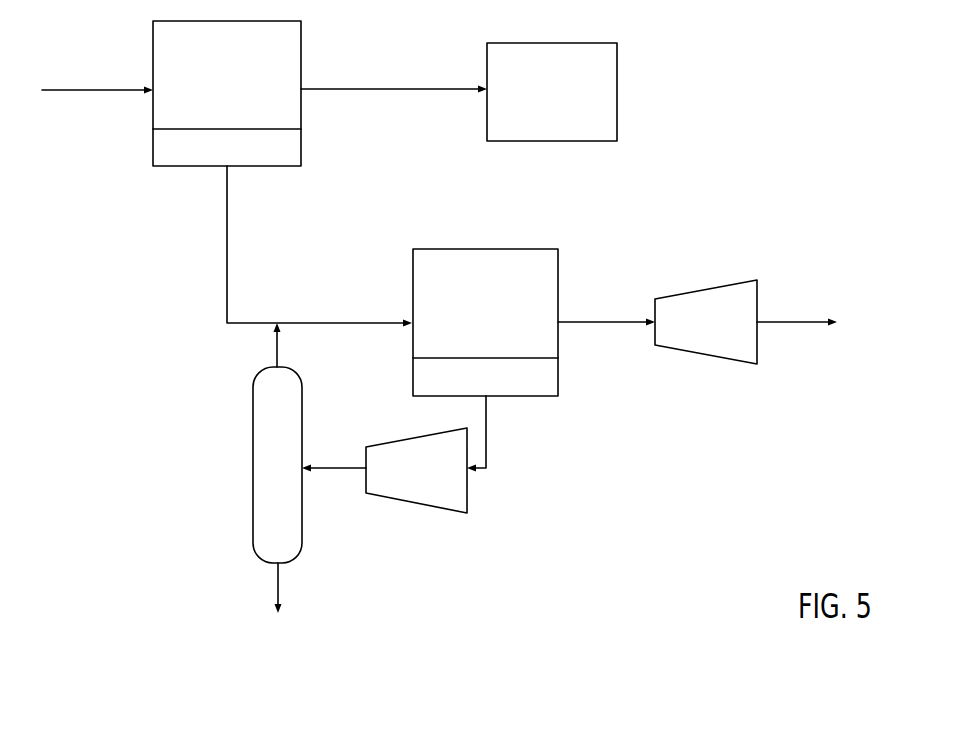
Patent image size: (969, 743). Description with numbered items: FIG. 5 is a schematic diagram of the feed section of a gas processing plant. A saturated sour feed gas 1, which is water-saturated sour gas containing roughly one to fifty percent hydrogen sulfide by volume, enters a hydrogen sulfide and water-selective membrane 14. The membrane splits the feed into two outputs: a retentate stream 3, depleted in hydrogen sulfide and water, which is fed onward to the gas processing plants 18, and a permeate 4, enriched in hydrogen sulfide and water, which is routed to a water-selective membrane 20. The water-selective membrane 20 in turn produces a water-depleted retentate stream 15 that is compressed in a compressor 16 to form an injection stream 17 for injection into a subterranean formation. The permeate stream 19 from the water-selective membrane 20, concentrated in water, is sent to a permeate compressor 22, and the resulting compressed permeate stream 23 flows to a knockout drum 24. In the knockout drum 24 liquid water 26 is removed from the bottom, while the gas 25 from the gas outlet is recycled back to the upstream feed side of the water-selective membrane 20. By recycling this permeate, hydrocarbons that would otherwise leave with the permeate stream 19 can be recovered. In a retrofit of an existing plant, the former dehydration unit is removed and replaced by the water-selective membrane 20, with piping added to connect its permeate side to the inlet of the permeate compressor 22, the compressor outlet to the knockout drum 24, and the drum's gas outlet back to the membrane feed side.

The saturated sour feed gas 1 is at (88, 90).
The hydrogen sulfide and water-selective membrane 14 is at (227, 93).
The retentate stream 3 is at (417, 89).
The gas processing plants 18 is at (552, 92).
The permeate 4 is at (227, 238).
The water-selective membrane 20 is at (485, 322).
The water-depleted retentate stream 15 is at (616, 322).
The compressor 16 is at (706, 322).
The injection stream 17 is at (810, 322).
The permeate stream 19 is at (486, 428).
The permeate compressor 22 is at (416, 470).
The compressed permeate stream 23 is at (336, 466).
The knockout drum 24 is at (277, 465).
The gas 25 is at (277, 348).
The liquid water 26 is at (278, 601).